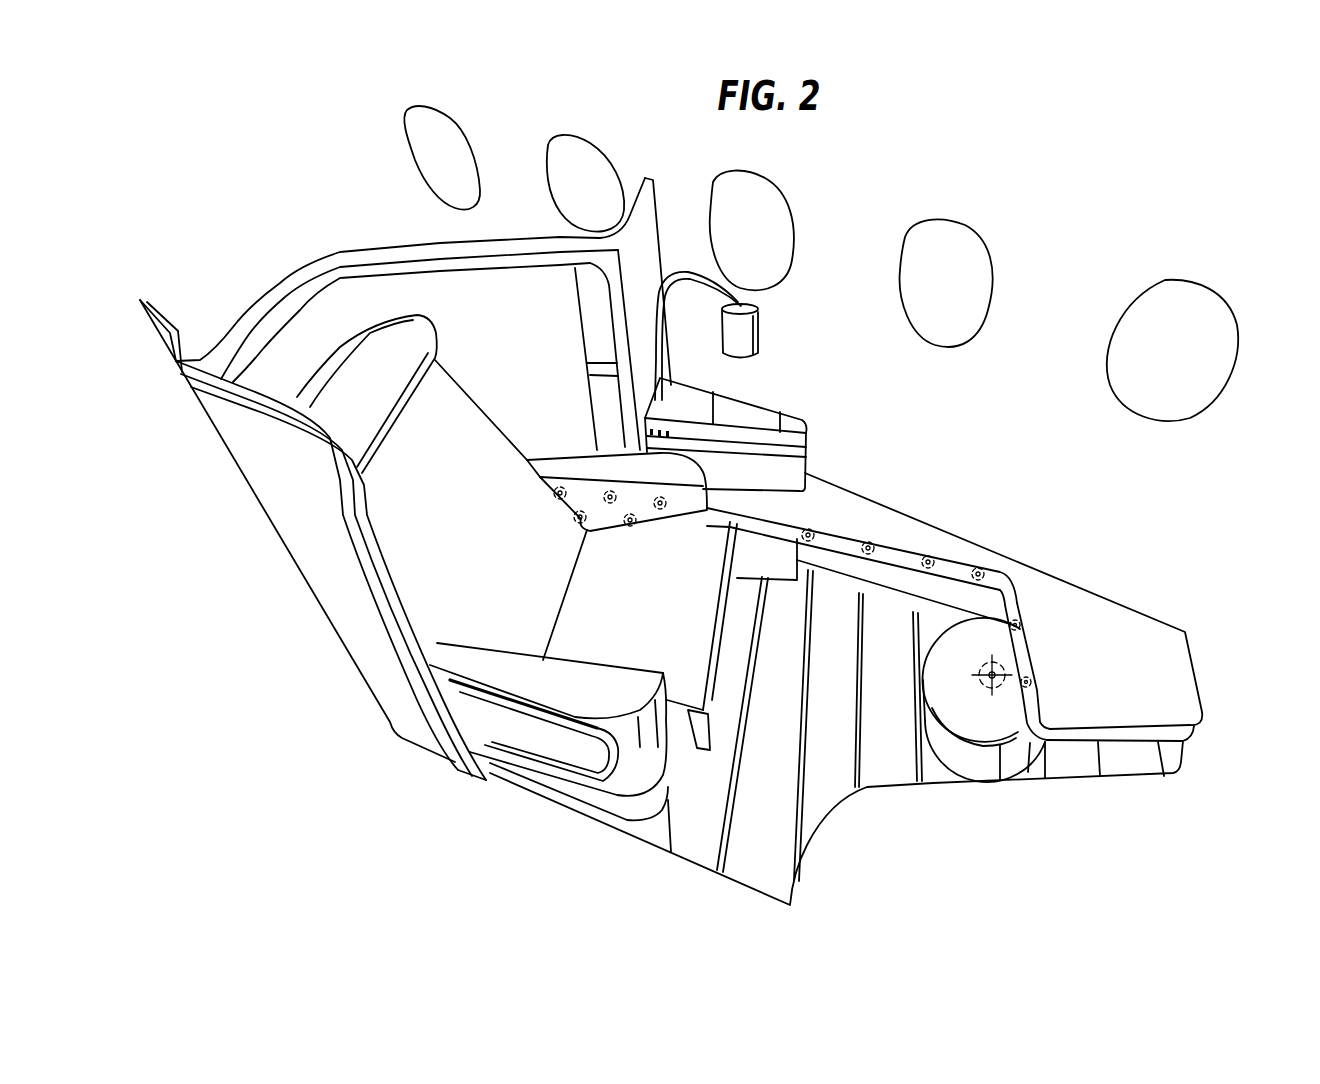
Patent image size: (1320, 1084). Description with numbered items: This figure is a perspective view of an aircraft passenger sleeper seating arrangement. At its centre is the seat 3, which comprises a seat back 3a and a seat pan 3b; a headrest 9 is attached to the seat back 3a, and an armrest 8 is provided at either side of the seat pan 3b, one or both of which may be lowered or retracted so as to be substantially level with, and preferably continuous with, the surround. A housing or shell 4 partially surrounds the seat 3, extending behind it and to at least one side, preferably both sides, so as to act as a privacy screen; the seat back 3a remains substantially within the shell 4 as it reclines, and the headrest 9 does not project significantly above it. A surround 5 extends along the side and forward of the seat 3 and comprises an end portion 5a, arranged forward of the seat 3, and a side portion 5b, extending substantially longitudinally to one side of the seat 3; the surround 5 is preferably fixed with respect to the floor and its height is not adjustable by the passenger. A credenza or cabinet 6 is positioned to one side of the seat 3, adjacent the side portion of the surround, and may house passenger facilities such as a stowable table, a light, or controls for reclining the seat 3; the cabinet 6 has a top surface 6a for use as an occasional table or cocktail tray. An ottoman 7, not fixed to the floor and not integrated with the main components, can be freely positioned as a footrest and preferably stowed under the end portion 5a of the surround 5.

The seat 3 is at (508, 580).
The seat back 3a is at (475, 470).
The seat pan 3b is at (630, 583).
The shell 4 is at (297, 503).
The surround 5 is at (812, 507).
The end portion 5a is at (1093, 653).
The side portion 5b is at (888, 523).
The cabinet 6 is at (797, 410).
The top surface 6a is at (743, 415).
The ottoman 7 is at (987, 637).
The armrest 8 is at (660, 473).
The headrest 9 is at (373, 370).